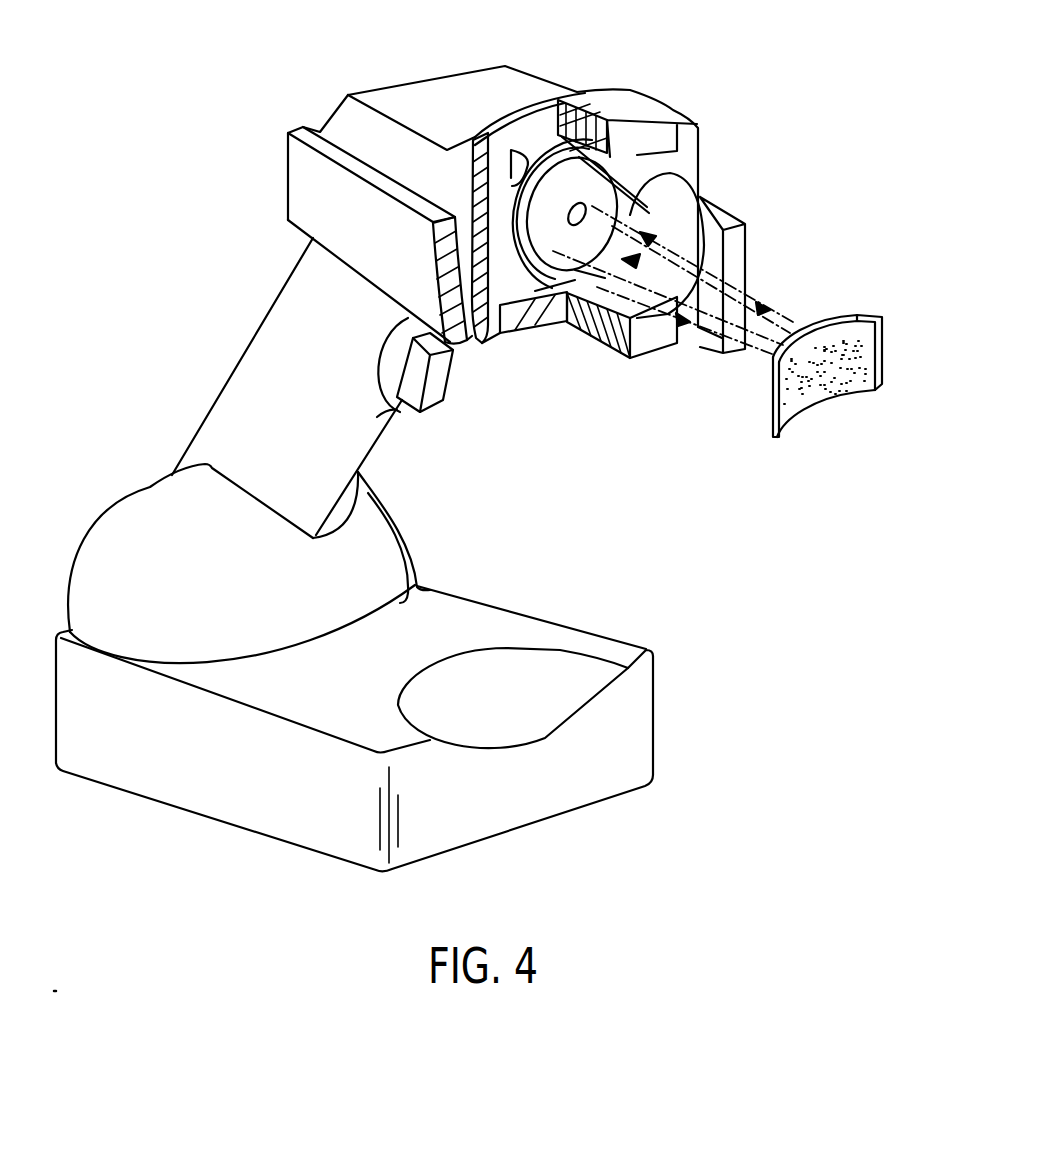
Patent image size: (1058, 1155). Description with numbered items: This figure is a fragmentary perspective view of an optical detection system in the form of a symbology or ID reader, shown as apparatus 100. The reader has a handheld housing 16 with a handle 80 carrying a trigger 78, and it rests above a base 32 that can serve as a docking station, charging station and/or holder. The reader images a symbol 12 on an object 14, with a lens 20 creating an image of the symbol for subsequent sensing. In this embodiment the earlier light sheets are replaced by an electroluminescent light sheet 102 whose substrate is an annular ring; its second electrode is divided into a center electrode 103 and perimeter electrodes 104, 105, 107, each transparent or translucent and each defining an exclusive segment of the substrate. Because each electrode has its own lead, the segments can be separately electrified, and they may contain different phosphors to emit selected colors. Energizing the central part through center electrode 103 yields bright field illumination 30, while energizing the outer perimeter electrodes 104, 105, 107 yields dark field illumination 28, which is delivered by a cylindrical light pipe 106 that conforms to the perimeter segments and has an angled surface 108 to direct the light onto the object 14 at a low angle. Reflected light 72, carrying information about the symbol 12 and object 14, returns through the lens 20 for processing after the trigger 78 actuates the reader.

The symbol 12 is at (823, 375).
The object 14 is at (853, 313).
The housing 16 is at (308, 187).
The lens 20 is at (512, 150).
The dark field illumination 28 is at (757, 283).
The bright field illumination 30 is at (677, 297).
The base 32 is at (196, 798).
The reflected light 72 is at (703, 330).
The trigger 78 is at (447, 383).
The handle 80 is at (257, 322).
The apparatus 100 is at (630, 75).
The electroluminescent light sheet 102 is at (517, 110).
The center electrode 103 is at (571, 188).
The perimeter electrode 104 is at (557, 130).
The perimeter electrode 105 is at (548, 292).
The light pipe 106 is at (637, 152).
The perimeter electrode 107 is at (585, 288).
The angled surface 108 is at (668, 188).